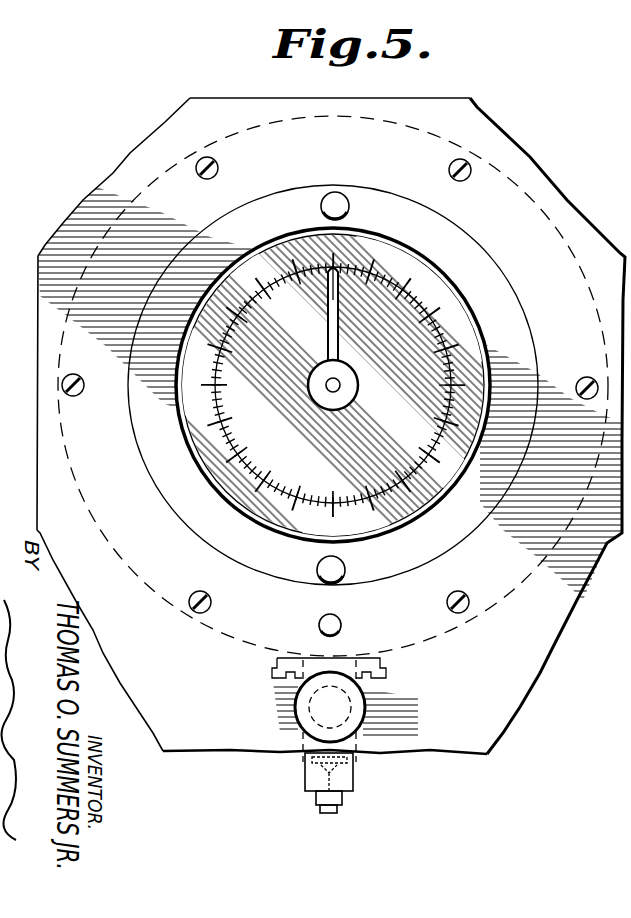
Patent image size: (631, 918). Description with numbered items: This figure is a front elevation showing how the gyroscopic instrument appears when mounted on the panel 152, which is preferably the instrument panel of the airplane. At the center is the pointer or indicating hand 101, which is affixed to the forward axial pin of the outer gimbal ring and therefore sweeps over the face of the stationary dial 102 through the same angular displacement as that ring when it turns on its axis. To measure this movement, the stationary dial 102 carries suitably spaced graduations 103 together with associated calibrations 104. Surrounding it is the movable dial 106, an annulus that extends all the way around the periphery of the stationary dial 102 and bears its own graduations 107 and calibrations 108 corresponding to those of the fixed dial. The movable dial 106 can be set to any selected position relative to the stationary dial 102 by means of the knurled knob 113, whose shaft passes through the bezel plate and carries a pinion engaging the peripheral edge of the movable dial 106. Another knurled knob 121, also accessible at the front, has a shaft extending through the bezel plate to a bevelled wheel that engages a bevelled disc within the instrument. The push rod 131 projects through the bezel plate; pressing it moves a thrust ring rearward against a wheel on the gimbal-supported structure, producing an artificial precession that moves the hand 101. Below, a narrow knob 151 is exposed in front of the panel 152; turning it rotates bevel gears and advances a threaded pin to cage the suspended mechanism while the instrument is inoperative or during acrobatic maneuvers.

The pointer or indicating hand 101 is at (337, 315).
The stationary dial 102 is at (262, 394).
The graduations 103 is at (227, 443).
The calibrations 104 is at (222, 505).
The movable dial 106 is at (387, 302).
The graduations 107 is at (413, 337).
The calibrations 108 is at (478, 352).
The knurled knob 113 is at (340, 567).
The knurled knob 121 is at (338, 193).
The push rod 131 is at (341, 621).
The knob 151 is at (298, 708).
The panel 152 is at (493, 698).